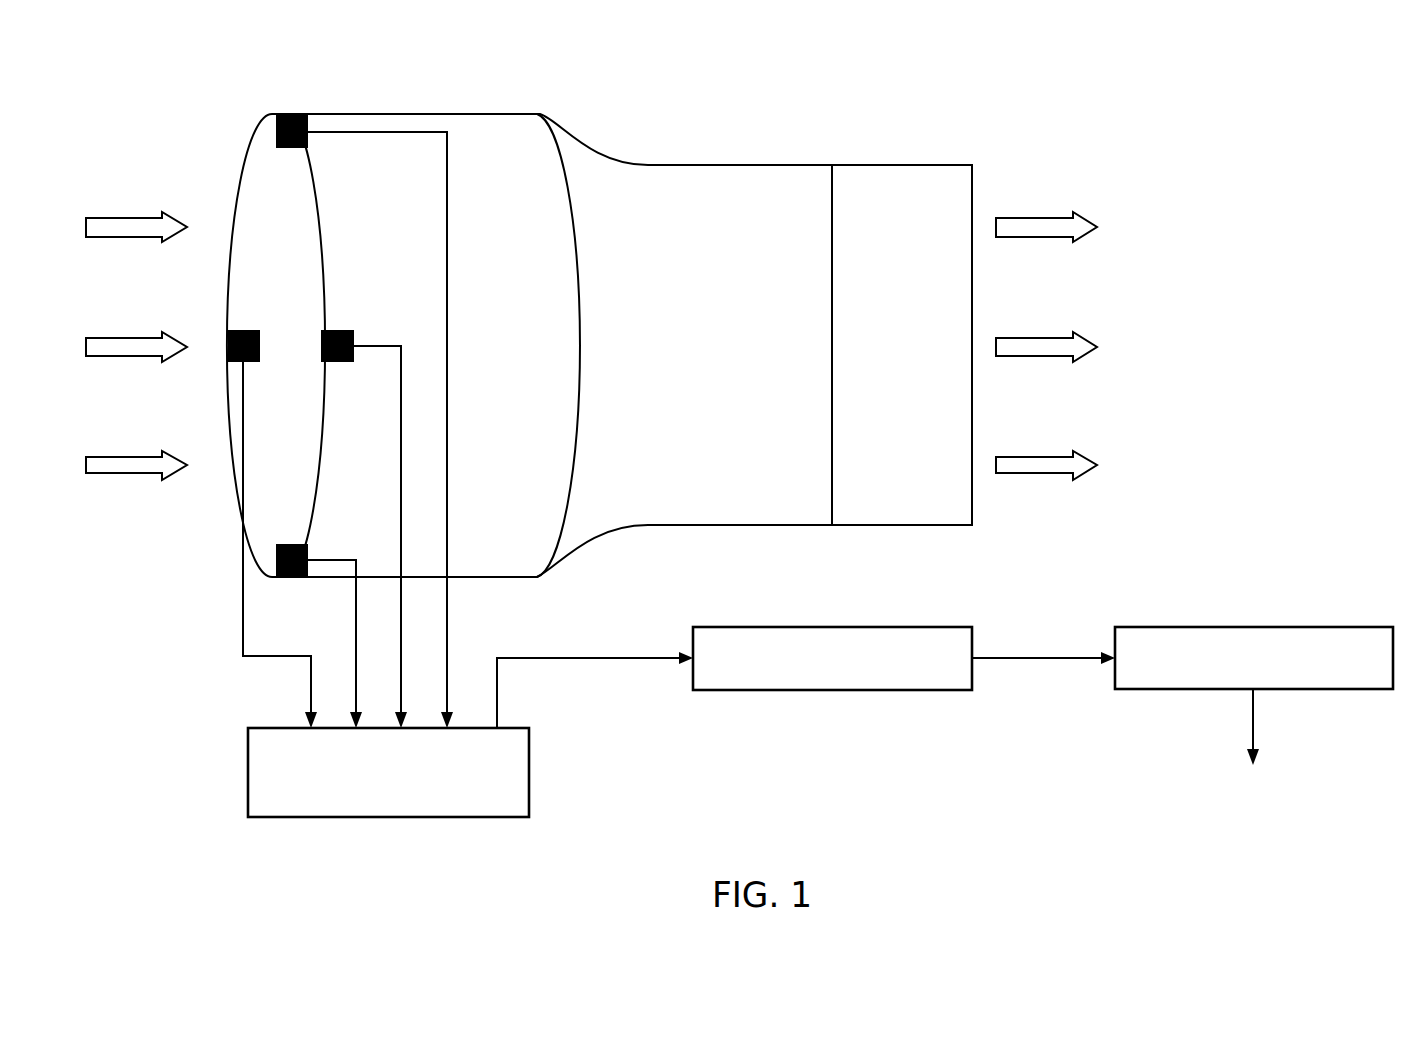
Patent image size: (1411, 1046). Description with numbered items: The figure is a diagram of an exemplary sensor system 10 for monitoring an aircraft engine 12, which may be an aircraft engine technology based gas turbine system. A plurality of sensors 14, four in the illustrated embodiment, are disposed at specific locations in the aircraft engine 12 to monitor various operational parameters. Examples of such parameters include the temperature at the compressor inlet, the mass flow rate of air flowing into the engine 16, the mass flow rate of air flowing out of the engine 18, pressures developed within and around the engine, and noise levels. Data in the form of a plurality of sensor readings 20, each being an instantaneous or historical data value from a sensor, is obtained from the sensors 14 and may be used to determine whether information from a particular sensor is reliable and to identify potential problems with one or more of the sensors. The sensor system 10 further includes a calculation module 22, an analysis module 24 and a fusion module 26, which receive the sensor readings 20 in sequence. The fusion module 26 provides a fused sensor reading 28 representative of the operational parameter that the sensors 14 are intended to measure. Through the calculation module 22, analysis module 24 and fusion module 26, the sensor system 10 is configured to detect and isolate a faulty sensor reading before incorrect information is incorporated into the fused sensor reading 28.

The sensor system 10 is at (1280, 86).
The aircraft engine 12 is at (748, 165).
The sensors 14 is at (337, 330).
The mass flow rate of air flowing into the engine 16 is at (117, 218).
The mass flow rate of air flowing out of the engine 18 is at (1035, 217).
The sensor readings 20 is at (447, 410).
The calculation module 22 is at (529, 770).
The analysis module 24 is at (928, 627).
The fusion module 26 is at (1260, 627).
The fused sensor reading 28 is at (1253, 730).